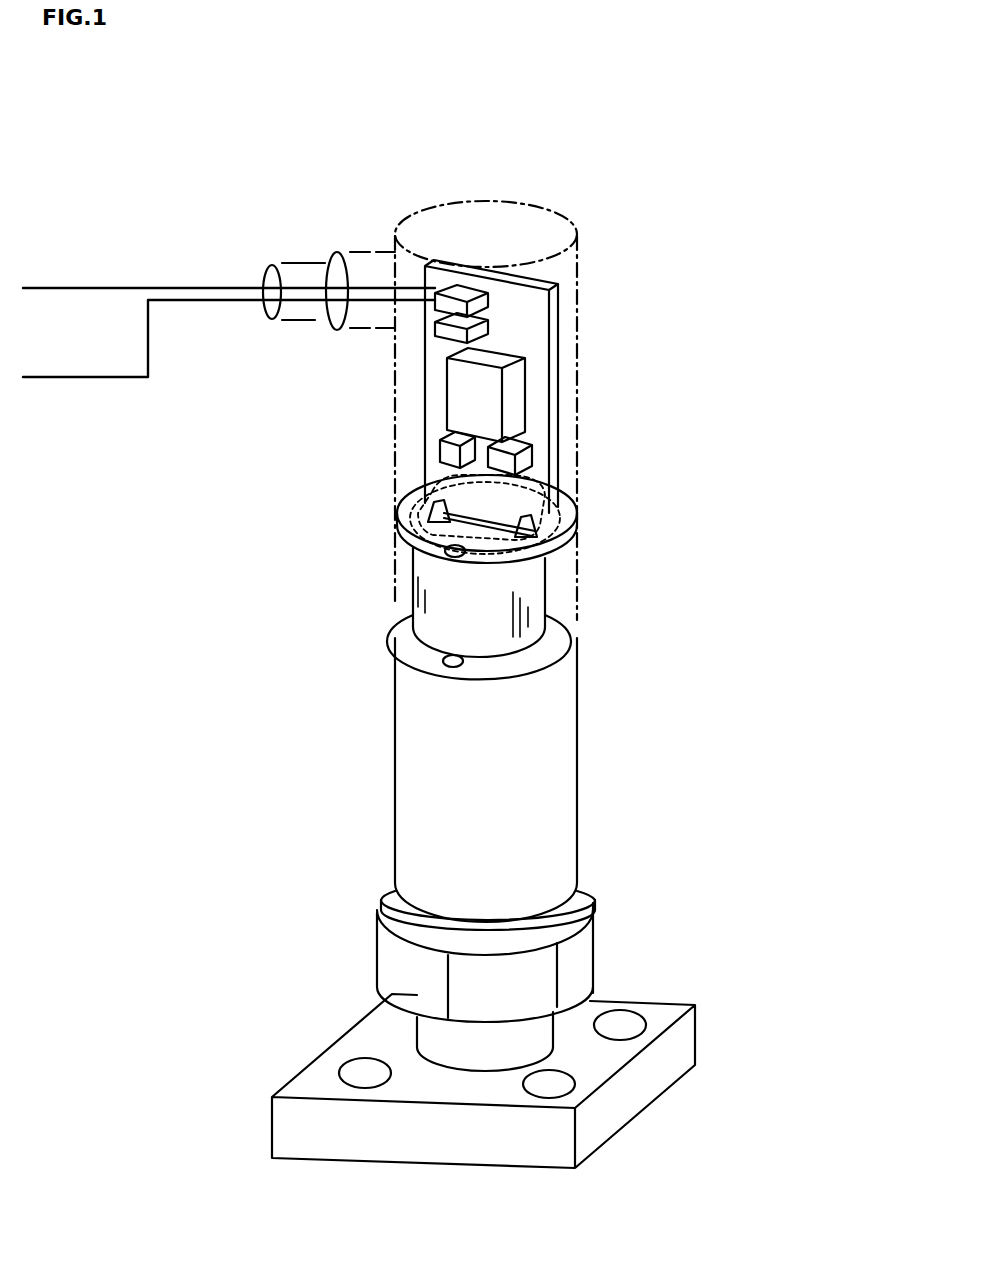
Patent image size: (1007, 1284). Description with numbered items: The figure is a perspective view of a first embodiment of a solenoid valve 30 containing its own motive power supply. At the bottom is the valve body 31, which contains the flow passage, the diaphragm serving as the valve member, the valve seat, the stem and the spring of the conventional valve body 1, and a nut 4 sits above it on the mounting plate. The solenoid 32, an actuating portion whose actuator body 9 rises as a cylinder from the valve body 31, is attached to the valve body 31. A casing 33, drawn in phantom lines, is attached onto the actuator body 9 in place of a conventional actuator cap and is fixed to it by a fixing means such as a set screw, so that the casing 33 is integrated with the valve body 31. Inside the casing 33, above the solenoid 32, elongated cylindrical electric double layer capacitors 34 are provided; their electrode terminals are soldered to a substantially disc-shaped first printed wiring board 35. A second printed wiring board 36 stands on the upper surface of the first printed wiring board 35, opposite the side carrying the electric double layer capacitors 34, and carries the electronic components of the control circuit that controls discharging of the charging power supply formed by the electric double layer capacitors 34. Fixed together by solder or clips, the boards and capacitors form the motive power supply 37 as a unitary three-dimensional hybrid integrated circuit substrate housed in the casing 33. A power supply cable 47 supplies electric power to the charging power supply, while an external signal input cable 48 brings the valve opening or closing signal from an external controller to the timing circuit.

The valve body 1 is at (653, 1070).
The nut 4 is at (583, 958).
The actuator body 9 is at (563, 808).
The solenoid valve 30 is at (678, 343).
The valve body 31 is at (347, 1007).
The solenoid 32 is at (393, 810).
The casing 33 is at (577, 222).
The electric double layer capacitors 34 is at (488, 623).
The first printed wiring board 35 is at (397, 512).
The second printed wiring board 36 is at (421, 355).
The motive power supply 37 is at (579, 285).
The power supply cable 47 is at (47, 288).
The external signal input cable 48 is at (58, 377).